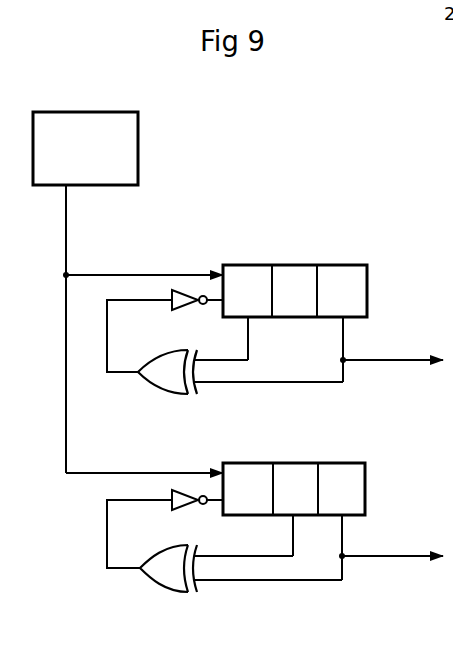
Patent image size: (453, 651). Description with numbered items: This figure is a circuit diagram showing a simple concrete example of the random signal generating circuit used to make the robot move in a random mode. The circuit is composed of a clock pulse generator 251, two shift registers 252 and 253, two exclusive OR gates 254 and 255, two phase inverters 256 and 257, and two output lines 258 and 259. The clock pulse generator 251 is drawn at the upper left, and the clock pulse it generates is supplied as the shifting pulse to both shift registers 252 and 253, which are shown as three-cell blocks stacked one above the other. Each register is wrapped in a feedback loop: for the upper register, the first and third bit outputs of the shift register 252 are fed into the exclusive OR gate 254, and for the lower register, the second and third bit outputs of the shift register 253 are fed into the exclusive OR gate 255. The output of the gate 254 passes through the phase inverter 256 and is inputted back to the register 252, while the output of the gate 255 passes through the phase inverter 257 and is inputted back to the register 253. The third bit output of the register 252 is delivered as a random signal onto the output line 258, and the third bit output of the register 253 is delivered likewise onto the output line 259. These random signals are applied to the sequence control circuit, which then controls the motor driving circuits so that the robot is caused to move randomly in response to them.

The clock pulse generator 251 is at (138, 155).
The shift register 252 is at (260, 265).
The shift register 253 is at (253, 463).
The exclusive OR gate 254 is at (158, 393).
The exclusive OR gate 255 is at (160, 592).
The phase inverter 256 is at (184, 311).
The phase inverter 257 is at (184, 511).
The output line 258 is at (408, 362).
The output line 259 is at (401, 558).